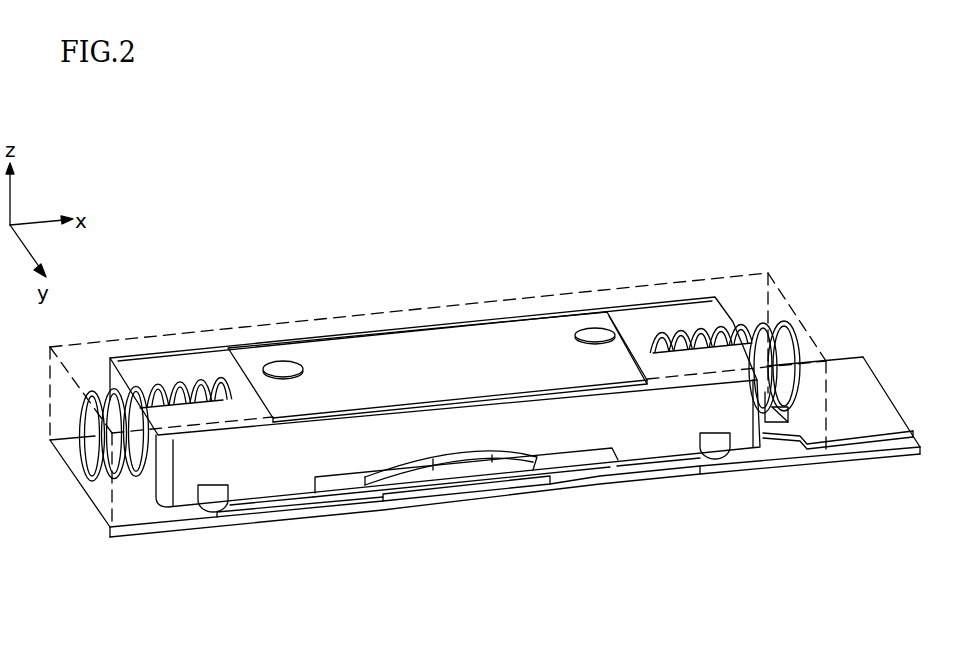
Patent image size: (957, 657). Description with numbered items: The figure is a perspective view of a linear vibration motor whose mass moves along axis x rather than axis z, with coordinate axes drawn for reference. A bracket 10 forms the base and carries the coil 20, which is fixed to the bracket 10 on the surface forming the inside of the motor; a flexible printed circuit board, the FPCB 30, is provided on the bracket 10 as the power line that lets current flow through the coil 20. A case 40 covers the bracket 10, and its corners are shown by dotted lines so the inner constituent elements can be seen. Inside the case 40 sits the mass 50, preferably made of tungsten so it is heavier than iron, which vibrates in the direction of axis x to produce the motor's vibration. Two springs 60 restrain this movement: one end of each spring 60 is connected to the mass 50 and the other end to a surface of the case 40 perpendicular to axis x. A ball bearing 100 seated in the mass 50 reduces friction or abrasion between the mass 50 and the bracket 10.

The bracket 10 is at (753, 478).
The coil 20 is at (468, 483).
The FPCB 30 is at (862, 449).
The case 40 is at (410, 308).
The mass 50 is at (188, 348).
The spring 60 is at (788, 320).
The ball bearing 100 is at (216, 514).